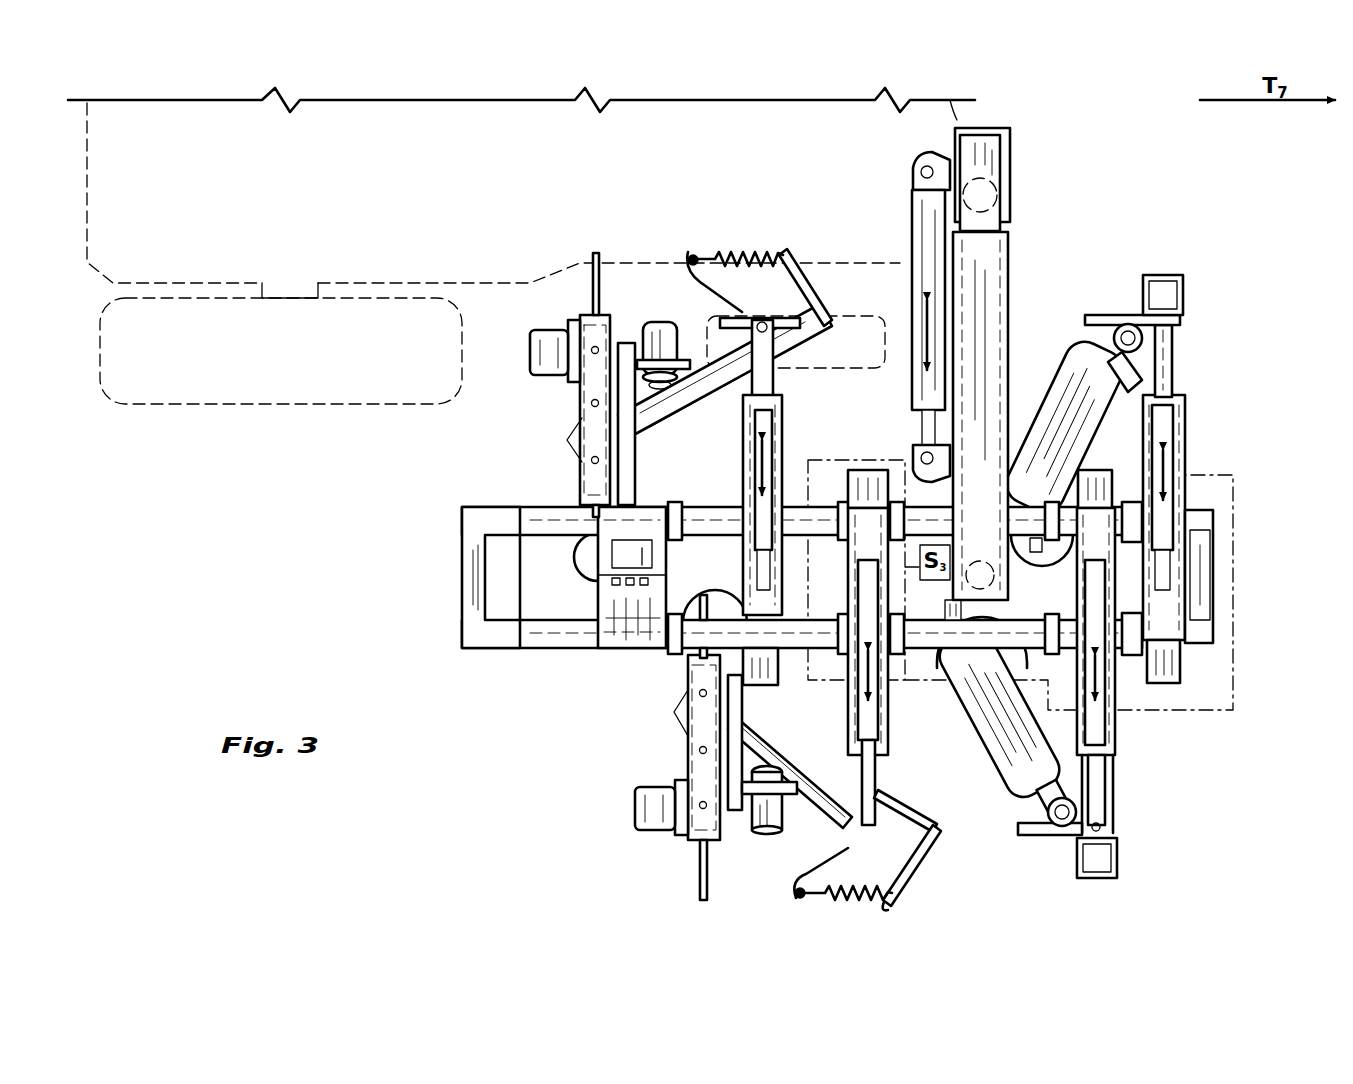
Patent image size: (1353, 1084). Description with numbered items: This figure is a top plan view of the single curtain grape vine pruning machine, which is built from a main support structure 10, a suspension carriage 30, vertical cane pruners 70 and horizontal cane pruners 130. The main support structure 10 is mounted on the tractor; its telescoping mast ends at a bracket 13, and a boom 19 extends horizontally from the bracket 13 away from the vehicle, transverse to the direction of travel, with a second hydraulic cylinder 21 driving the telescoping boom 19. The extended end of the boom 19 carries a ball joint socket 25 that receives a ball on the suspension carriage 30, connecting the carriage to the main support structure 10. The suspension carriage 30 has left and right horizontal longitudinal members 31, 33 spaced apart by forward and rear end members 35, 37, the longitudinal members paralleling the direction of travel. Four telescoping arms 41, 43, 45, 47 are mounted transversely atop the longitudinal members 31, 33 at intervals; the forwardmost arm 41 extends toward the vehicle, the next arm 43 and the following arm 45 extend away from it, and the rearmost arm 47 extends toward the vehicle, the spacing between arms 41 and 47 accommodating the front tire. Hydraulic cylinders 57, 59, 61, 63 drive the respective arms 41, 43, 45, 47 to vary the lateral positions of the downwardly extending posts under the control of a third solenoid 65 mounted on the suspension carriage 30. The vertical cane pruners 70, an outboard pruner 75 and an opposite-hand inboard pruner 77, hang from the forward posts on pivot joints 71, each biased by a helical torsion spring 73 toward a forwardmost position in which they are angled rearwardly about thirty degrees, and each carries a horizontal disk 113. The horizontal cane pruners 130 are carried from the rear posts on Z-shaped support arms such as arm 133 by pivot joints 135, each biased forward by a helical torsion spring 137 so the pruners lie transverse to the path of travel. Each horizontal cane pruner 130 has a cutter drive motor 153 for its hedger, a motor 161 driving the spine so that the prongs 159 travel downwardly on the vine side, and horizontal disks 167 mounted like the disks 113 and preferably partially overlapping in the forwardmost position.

The main support structure 10 is at (1028, 188).
The bracket 13 is at (1005, 150).
The boom 19 is at (992, 262).
The second hydraulic cylinder 21 is at (925, 212).
The ball joint socket 25 is at (1008, 594).
The suspension carriage 30 is at (766, 597).
The left horizontal longitudinal member 31 is at (548, 508).
The right horizontal longitudinal member 33 is at (538, 642).
The forward end member 35 is at (1208, 580).
The rear end member 37 is at (470, 578).
The forwardmost telescoping arm 41 is at (1212, 525).
The telescoping arm 43 is at (1118, 752).
The telescoping arm 45 is at (880, 748).
The rearmost telescoping arm 47 is at (789, 466).
The hydraulic cylinder 57 is at (1170, 440).
The hydraulic cylinder 59 is at (1118, 728).
The hydraulic cylinder 61 is at (877, 666).
The hydraulic cylinder 63 is at (762, 420).
The third solenoid 65 is at (850, 545).
The vertical cane pruners 70 is at (1042, 330).
The pivot joints 71 is at (1128, 326).
The helical torsion spring 73 is at (1165, 360).
The outboard pruner 75 is at (992, 748).
The inboard pruner 77 is at (1055, 420).
The horizontal disk 113 is at (1062, 528).
The horizontal cane pruners 130 is at (566, 392).
The Z-shaped support arm 133 is at (698, 392).
The pivot joints 135 is at (818, 863).
The helical torsion spring 137 is at (755, 252).
The cutter drive motor 153 is at (656, 328).
The prongs 159 is at (595, 256).
The motors 161 is at (545, 340).
The horizontal disks 167 is at (588, 540).